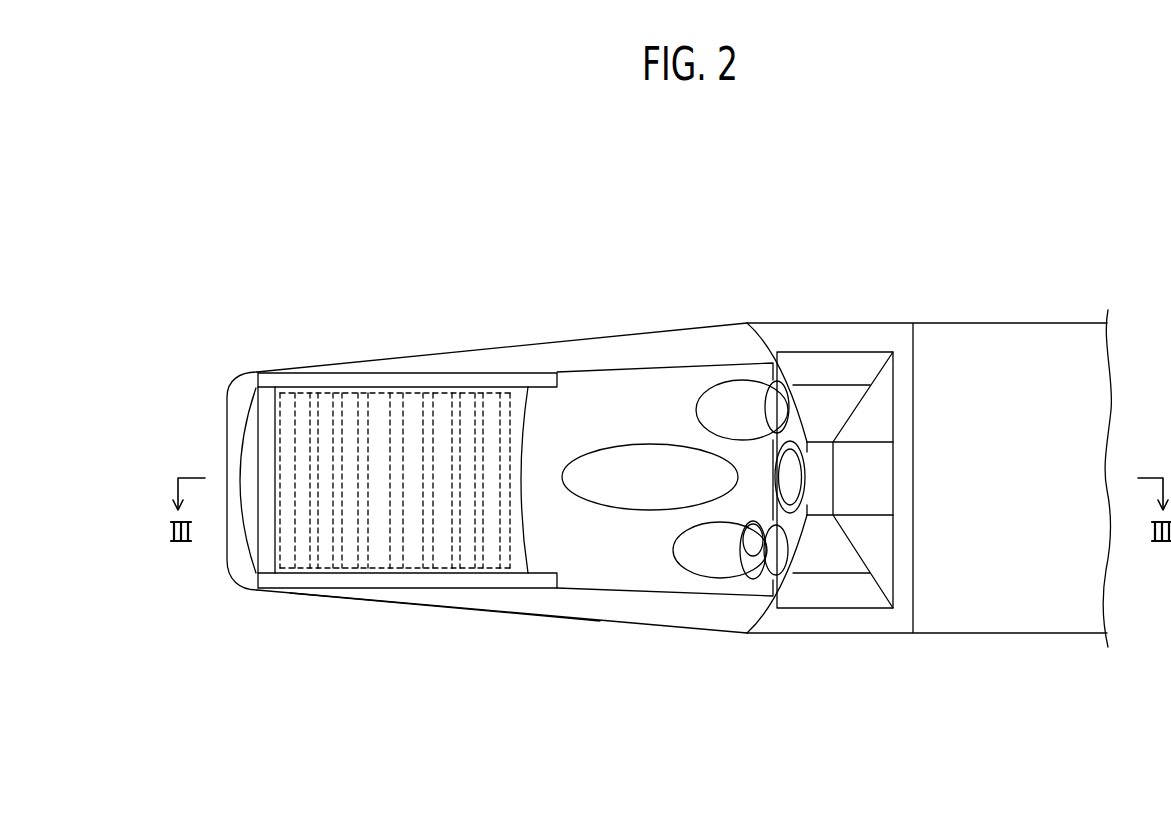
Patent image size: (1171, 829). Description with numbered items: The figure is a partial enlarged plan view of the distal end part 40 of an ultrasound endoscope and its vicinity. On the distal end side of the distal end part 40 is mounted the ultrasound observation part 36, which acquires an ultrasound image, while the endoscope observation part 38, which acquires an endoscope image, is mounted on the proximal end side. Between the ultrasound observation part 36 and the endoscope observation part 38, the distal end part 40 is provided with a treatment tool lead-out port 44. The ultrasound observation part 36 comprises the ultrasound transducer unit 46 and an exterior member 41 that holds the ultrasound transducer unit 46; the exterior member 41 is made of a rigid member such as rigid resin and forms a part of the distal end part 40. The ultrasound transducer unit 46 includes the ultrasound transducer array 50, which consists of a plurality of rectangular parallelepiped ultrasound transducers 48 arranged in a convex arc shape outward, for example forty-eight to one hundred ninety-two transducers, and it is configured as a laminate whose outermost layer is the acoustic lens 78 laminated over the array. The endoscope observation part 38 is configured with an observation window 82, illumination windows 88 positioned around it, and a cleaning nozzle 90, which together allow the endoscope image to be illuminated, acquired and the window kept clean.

The ultrasound observation part 36 is at (395, 661).
The endoscope observation part 38 is at (844, 680).
The distal end part 40 is at (574, 292).
The exterior member 41 is at (570, 605).
The treatment tool lead-out port 44 is at (647, 450).
The ultrasound transducer unit 46 is at (292, 610).
The ultrasound transducer 48 is at (382, 484).
The ultrasound transducer array 50 is at (333, 384).
The acoustic lens 78 is at (275, 420).
The observation window 82 is at (790, 478).
The illumination window 88 is at (777, 407).
The cleaning nozzle 90 is at (755, 545).